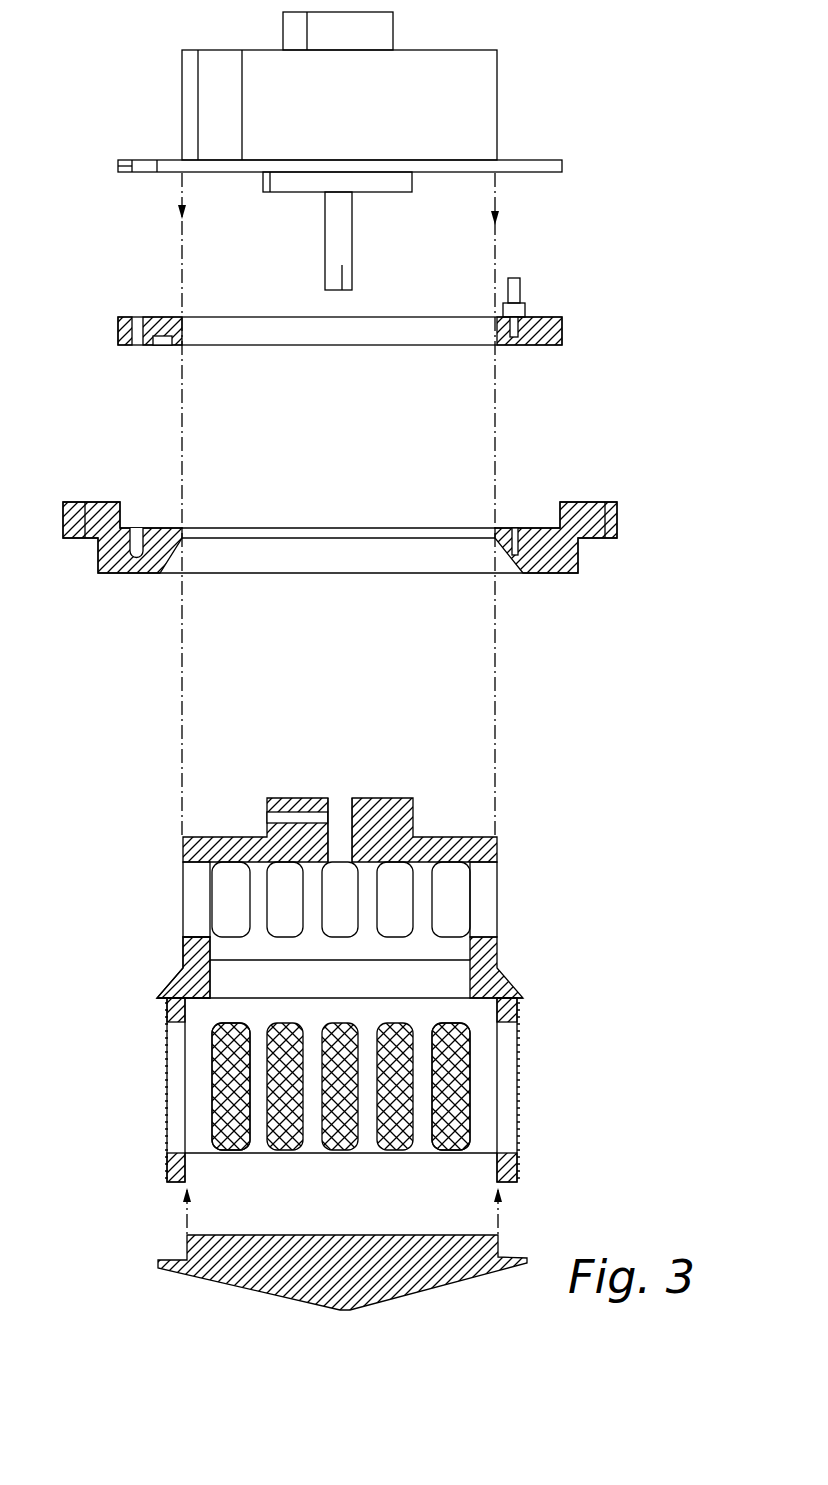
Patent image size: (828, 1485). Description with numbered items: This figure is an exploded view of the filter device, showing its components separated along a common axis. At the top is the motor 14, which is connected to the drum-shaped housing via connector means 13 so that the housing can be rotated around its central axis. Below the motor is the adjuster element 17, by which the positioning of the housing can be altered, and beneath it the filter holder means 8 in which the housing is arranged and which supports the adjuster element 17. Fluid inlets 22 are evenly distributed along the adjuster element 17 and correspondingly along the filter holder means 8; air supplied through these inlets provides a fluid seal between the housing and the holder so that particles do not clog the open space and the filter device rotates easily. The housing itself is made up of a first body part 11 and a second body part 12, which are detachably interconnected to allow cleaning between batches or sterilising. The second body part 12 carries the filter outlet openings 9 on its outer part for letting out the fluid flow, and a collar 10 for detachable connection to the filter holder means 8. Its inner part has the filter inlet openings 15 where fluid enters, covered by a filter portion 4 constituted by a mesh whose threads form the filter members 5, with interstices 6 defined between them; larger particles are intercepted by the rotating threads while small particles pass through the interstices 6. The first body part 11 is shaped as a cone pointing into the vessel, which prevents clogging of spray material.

The motor 14 is at (482, 95).
The adjuster element 17 is at (550, 317).
The fluid inlets 22 is at (515, 285).
The filter holder means 8 is at (570, 553).
The second body part 12 is at (504, 933).
The connector means 13 is at (350, 820).
The filter outlet openings 9 is at (257, 870).
The collar 10 is at (185, 975).
The filter portion 4 is at (523, 1092).
The filter members 5 is at (460, 1108).
The filter inlet openings 15 is at (470, 1050).
The interstices 6 is at (215, 1083).
The first body part 11 is at (460, 1268).